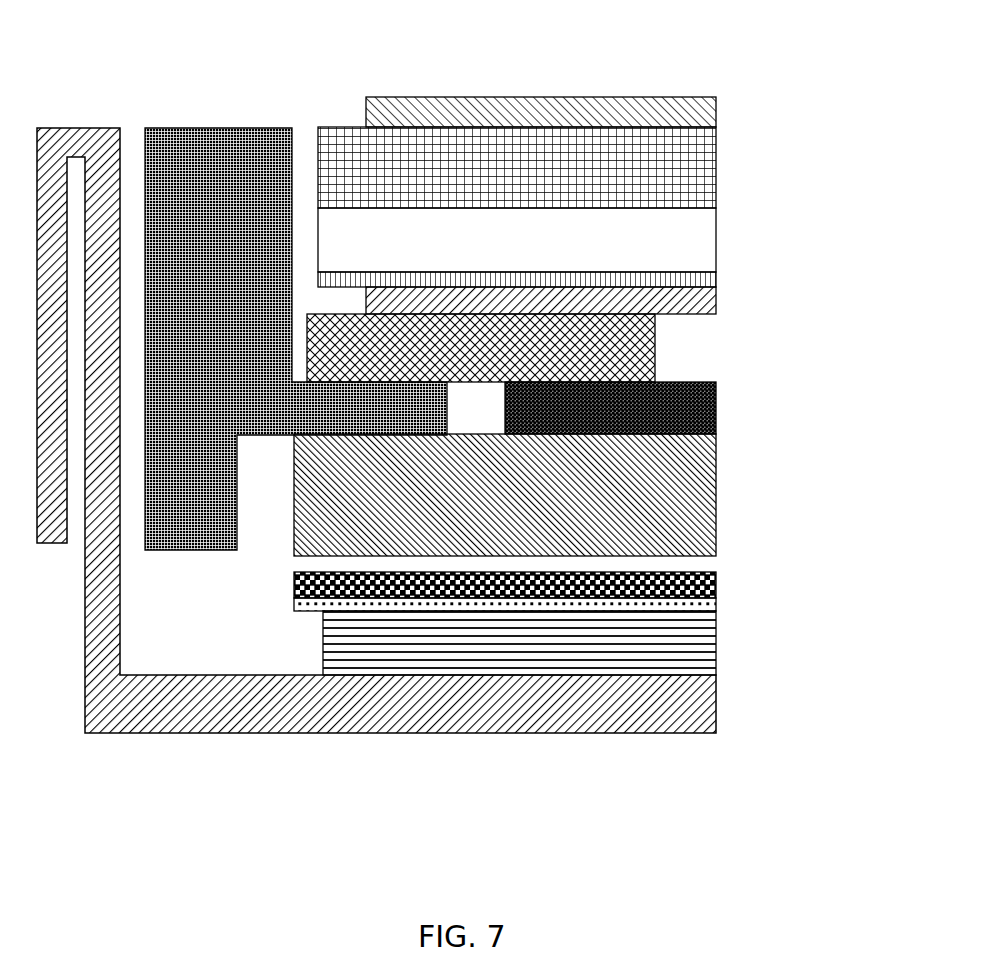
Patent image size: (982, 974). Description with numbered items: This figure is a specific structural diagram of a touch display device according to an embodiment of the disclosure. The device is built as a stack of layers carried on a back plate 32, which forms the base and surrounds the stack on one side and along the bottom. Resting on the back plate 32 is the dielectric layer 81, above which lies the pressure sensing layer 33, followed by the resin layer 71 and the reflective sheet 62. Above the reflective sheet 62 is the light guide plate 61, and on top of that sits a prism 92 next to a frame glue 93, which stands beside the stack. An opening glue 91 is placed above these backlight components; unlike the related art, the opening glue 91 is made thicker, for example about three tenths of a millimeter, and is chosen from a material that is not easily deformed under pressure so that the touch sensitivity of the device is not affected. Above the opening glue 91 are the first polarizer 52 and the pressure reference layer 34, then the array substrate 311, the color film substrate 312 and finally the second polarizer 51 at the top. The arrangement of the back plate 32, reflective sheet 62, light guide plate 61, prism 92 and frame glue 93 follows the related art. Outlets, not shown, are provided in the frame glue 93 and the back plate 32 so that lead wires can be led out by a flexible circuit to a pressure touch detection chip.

The back plate 32 is at (158, 715).
The frame glue 93 is at (190, 153).
The second polarizer 51 is at (427, 100).
The color film substrate 312 is at (567, 135).
The array substrate 311 is at (717, 235).
The pressure reference layer 34 is at (717, 280).
The first polarizer 52 is at (717, 304).
The opening glue 91 is at (655, 338).
The prism 92 is at (717, 423).
The light guide plate 61 is at (717, 518).
The reflective sheet 62 is at (337, 567).
The resin layer 71 is at (492, 595).
The pressure sensing layer 33 is at (633, 603).
The dielectric layer 81 is at (717, 645).